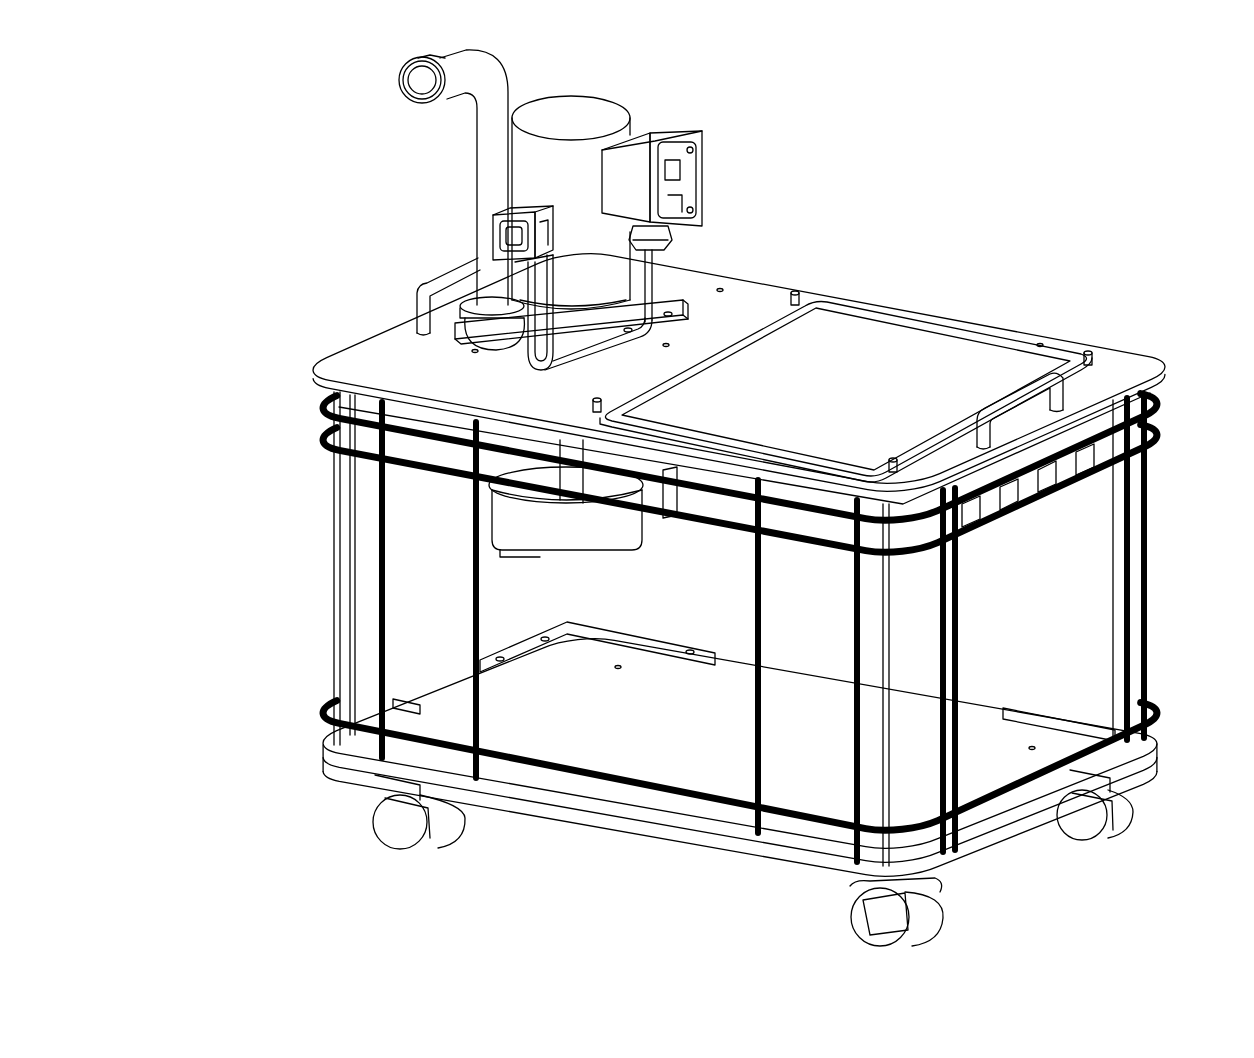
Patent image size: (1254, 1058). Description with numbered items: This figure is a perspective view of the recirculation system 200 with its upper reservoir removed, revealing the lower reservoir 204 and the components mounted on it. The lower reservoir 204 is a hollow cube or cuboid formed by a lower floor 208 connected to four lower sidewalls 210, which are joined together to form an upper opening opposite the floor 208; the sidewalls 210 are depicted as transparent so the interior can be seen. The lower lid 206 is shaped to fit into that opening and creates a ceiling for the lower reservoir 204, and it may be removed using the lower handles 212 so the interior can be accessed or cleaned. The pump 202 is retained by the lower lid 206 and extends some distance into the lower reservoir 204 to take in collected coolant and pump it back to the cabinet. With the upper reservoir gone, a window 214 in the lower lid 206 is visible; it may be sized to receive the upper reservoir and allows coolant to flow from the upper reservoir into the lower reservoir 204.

The recirculation system 200 is at (200, 103).
The pump 202 is at (648, 100).
The lower reservoir 204 is at (304, 620).
The lower lid 206 is at (360, 362).
The lower floor 208 is at (572, 815).
The lower sidewalls 210 is at (365, 625).
The lower handles 212 is at (428, 277).
The window 214 is at (870, 340).